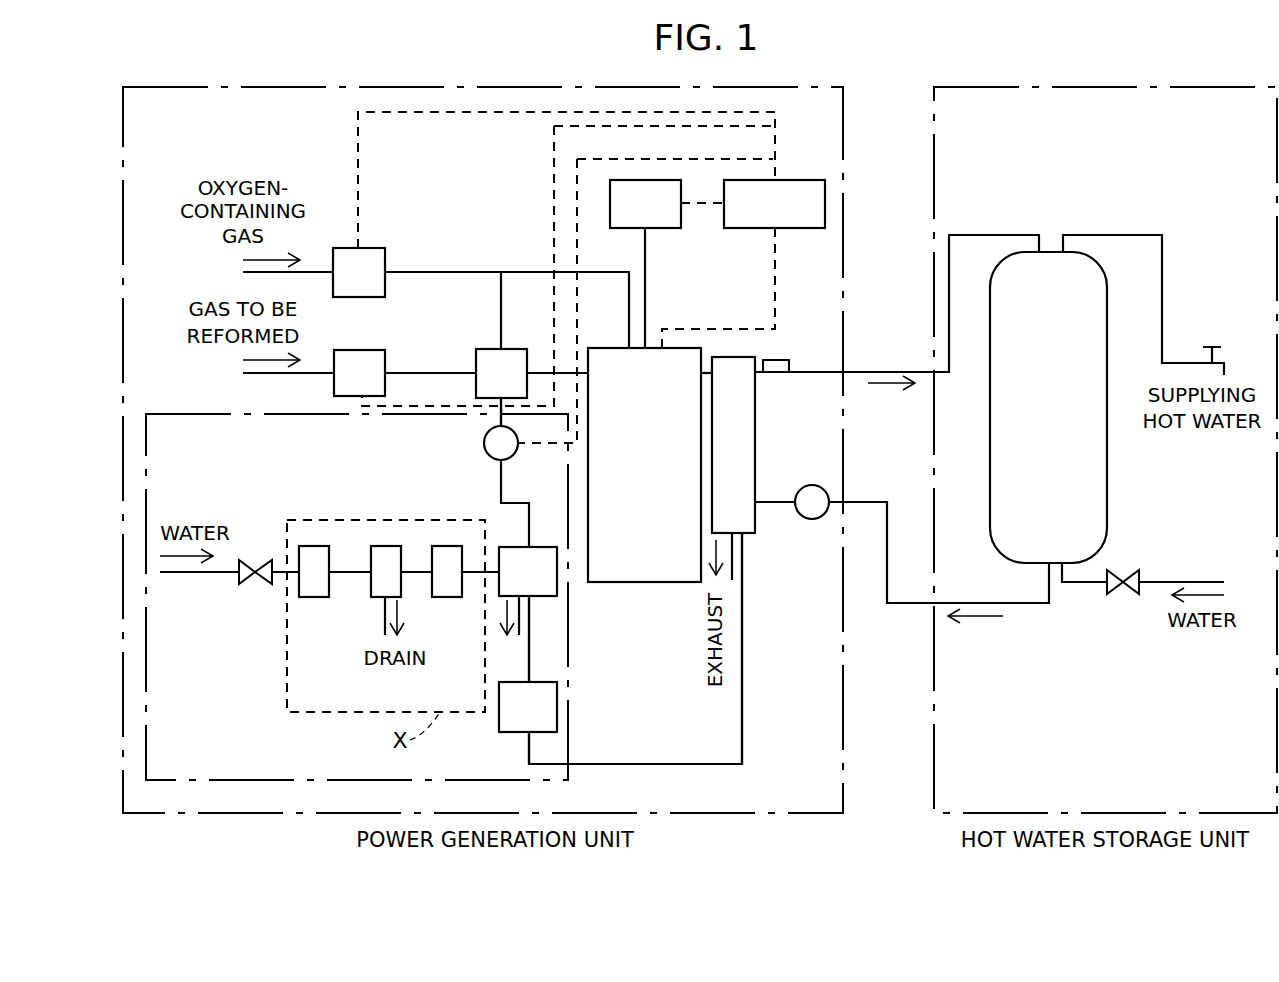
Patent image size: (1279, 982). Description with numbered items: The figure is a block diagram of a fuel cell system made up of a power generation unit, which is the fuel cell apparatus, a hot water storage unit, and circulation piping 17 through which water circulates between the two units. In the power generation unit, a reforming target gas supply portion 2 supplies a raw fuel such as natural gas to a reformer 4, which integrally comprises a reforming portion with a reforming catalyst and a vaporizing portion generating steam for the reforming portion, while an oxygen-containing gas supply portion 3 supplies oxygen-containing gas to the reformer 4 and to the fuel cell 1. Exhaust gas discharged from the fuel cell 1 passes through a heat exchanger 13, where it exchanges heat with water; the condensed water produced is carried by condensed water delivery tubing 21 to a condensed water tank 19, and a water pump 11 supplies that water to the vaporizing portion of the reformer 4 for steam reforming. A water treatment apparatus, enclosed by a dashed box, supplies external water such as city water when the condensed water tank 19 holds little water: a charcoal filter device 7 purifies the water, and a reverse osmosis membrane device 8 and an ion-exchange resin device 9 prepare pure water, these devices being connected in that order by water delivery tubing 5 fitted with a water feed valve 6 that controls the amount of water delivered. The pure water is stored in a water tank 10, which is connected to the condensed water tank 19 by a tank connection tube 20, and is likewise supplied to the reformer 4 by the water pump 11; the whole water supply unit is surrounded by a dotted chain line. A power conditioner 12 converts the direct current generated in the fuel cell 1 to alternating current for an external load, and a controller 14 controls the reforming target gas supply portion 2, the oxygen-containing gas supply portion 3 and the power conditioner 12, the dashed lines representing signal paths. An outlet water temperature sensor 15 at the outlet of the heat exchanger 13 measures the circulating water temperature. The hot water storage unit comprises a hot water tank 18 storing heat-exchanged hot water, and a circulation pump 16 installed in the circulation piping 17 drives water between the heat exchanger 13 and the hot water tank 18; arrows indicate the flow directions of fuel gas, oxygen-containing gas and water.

The fuel cell 1 is at (665, 570).
The reforming target gas supply portion 2 is at (364, 360).
The oxygen-containing gas supply portion 3 is at (375, 262).
The reformer 4 is at (490, 360).
The water delivery tubing 5 is at (190, 578).
The water feed valve 6 is at (250, 580).
The charcoal filter device 7 is at (316, 602).
The reverse osmosis membrane device 8 is at (375, 590).
The ion-exchange resin device 9 is at (448, 600).
The water tank 10 is at (545, 585).
The water pump 11 is at (493, 447).
The power conditioner 12 is at (657, 222).
The heat exchanger 13 is at (754, 540).
The controller 14 is at (806, 190).
The outlet water temperature sensor 15 is at (778, 365).
The circulation pump 16 is at (809, 492).
The circulation piping 17 is at (851, 372).
The hot water tank 18 is at (1078, 268).
The condensed water tank 19 is at (545, 710).
The tank connection tube 20 is at (529, 648).
The condensed water delivery tubing 21 is at (742, 700).